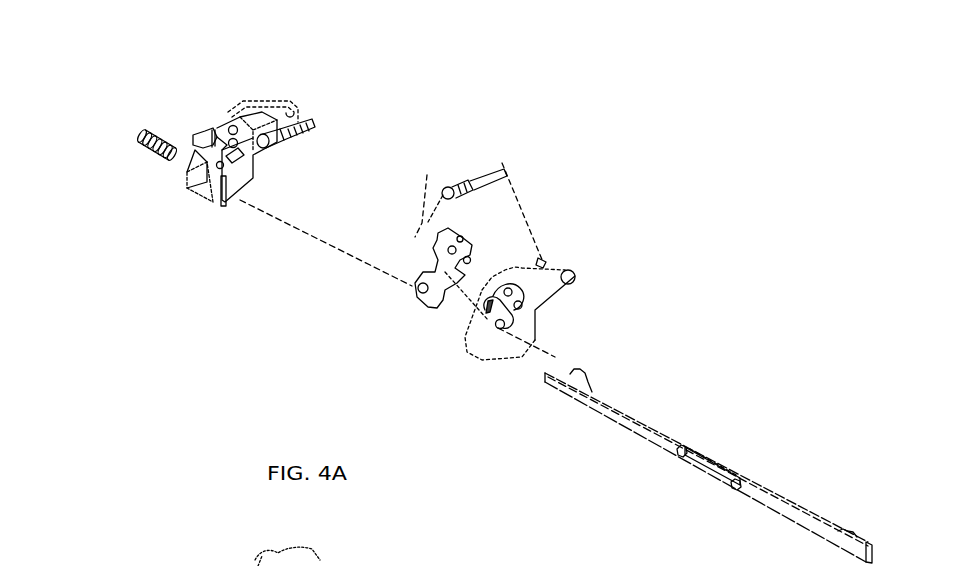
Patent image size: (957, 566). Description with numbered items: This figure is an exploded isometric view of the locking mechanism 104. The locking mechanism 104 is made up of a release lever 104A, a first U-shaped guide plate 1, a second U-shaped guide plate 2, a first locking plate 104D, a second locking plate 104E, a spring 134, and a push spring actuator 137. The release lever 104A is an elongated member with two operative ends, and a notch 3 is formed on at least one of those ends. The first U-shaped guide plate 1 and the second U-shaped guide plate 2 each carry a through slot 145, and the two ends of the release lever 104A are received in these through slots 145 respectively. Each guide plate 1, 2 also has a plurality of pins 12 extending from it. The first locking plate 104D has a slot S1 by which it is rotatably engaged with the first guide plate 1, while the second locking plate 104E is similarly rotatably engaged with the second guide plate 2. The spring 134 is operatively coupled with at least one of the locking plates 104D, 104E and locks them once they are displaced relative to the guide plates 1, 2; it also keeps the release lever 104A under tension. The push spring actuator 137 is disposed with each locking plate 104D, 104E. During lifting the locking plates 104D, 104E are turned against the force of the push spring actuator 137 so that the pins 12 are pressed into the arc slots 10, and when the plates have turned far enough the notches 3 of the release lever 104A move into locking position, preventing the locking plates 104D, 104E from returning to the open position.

The first U-shaped guide plate 1 is at (278, 107).
The second U-shaped guide plate 2 is at (478, 350).
The notch 3 is at (849, 520).
The arc slots 10 is at (448, 286).
The pins 12 is at (245, 565).
The locking mechanism 104 is at (477, 114).
The release lever 104A is at (628, 427).
The first locking plate 104D is at (202, 176).
The second locking plate 104E is at (421, 303).
The spring 134 is at (132, 143).
The push spring actuator 137 is at (310, 119).
The through slot 145 is at (225, 187).
The slot S1 is at (365, 561).